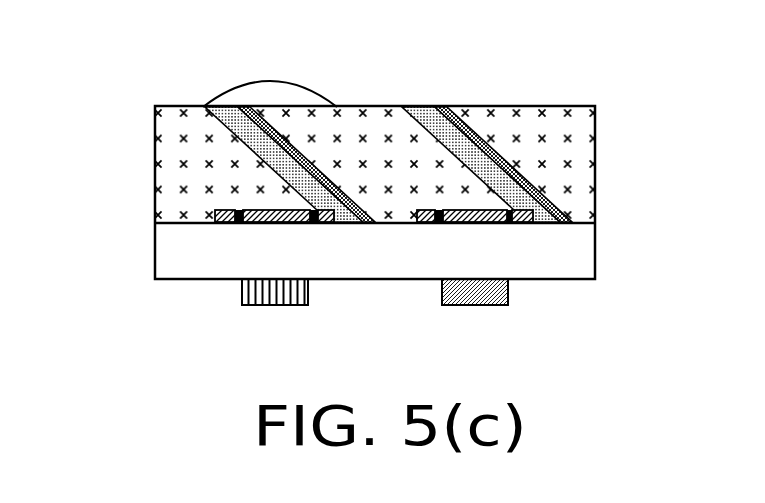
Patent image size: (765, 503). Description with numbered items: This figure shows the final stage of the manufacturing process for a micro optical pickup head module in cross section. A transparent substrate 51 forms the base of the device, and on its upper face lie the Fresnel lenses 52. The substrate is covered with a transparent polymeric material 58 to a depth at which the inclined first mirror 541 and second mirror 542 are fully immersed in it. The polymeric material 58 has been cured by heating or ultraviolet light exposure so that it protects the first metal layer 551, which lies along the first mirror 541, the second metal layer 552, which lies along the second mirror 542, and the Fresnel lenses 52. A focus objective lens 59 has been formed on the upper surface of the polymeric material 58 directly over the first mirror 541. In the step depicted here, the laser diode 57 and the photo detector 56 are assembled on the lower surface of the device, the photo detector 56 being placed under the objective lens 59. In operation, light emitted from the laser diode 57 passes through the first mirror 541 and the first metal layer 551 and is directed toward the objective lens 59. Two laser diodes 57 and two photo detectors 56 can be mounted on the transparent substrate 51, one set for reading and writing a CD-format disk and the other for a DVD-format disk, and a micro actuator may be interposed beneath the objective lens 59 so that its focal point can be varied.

The transparent substrate 51 is at (585, 252).
The Fresnel lenses 52 is at (253, 223).
The photo detector 56 is at (275, 305).
The laser diode 57 is at (475, 305).
The transparent polymeric material 58 is at (585, 168).
The focus objective lens 59 is at (255, 92).
The first mirror 541 is at (245, 110).
The second mirror 542 is at (418, 108).
The first metal layer 551 is at (262, 134).
The second metal layer 552 is at (486, 139).